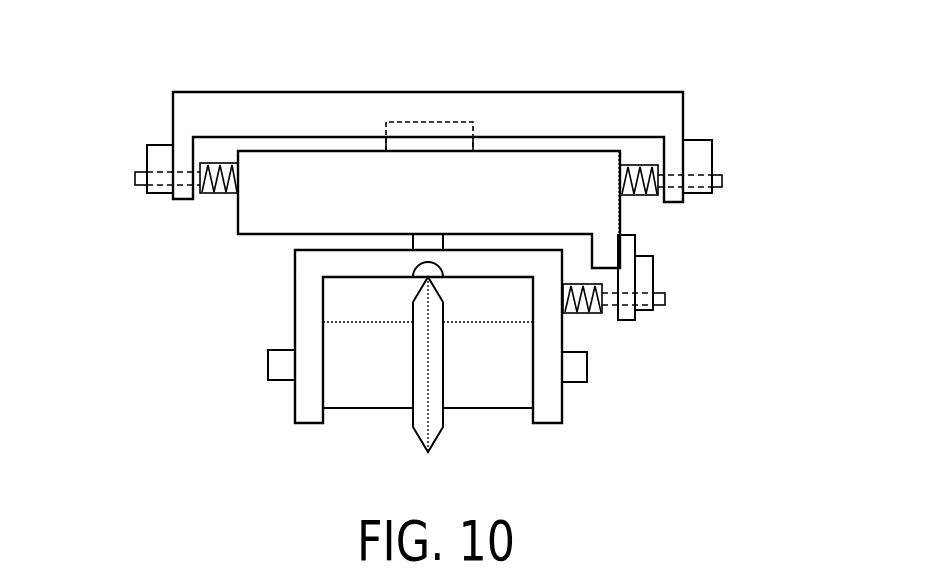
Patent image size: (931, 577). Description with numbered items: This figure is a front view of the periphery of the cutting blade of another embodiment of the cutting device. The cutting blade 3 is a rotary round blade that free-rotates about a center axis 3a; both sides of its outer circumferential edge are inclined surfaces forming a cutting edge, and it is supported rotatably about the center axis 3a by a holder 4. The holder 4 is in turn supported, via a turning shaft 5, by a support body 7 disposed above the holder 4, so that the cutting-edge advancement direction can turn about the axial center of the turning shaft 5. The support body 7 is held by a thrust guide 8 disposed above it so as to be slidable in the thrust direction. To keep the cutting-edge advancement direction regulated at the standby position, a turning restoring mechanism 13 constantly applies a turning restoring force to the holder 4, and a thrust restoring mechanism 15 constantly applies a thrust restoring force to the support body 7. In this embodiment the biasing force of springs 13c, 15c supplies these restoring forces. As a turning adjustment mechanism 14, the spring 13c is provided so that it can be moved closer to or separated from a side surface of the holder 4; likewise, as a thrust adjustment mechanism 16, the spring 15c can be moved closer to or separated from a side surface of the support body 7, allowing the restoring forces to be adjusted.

The cutting blade 3 is at (420, 418).
The center axis 3a is at (280, 368).
The holder 4 is at (300, 327).
The turning shaft 5 is at (442, 242).
The support body 7 is at (358, 158).
The thrust guide 8 is at (485, 99).
The turning restoring mechanism 13 is at (581, 286).
The spring 13c is at (577, 313).
The turning adjustment mechanism 14 is at (648, 282).
The thrust restoring mechanism 15 is at (218, 155).
The spring 15c is at (218, 200).
The thrust adjustment mechanism 16 is at (153, 158).